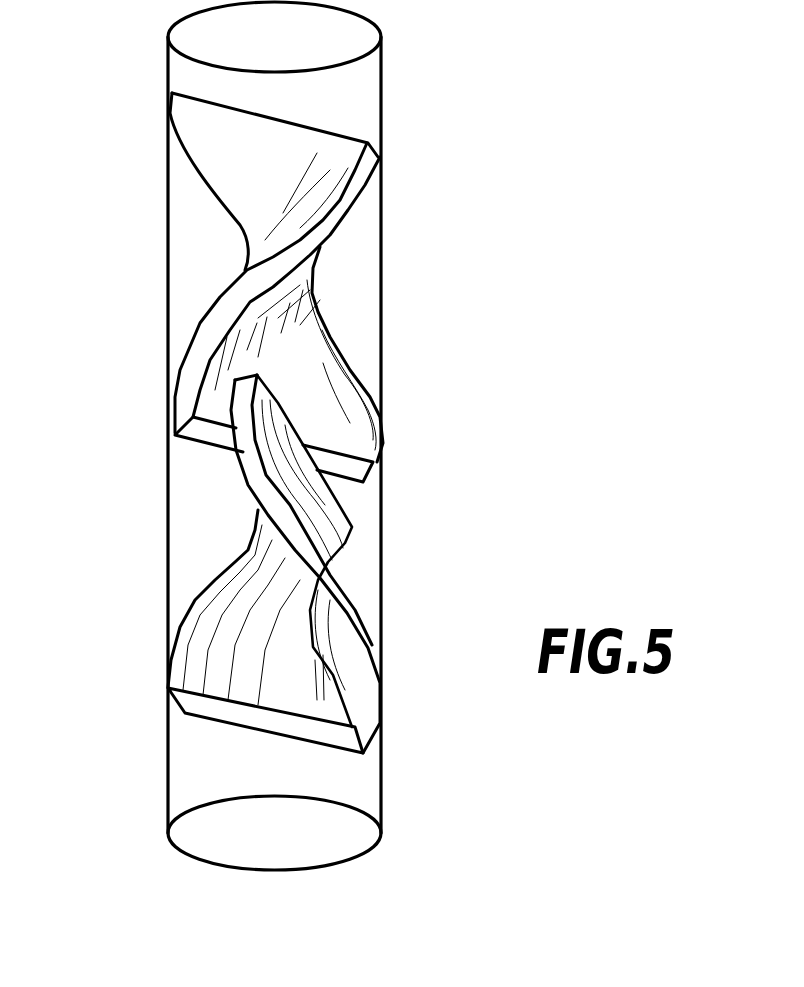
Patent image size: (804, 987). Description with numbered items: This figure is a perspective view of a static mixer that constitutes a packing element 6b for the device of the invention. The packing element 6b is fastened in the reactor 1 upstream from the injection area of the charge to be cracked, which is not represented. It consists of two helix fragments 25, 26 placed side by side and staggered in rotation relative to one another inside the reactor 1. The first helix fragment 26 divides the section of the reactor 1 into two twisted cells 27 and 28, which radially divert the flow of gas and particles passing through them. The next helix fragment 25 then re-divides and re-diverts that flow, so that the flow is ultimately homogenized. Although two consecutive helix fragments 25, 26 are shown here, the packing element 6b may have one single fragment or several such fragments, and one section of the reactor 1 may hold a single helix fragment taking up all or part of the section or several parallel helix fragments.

The reactor 1 is at (381, 103).
The packing element 6b is at (107, 72).
The next helix fragment 25 is at (320, 402).
The first helix fragment 26 is at (302, 657).
The twisted cell 27 is at (343, 573).
The twisted cell 28 is at (202, 557).